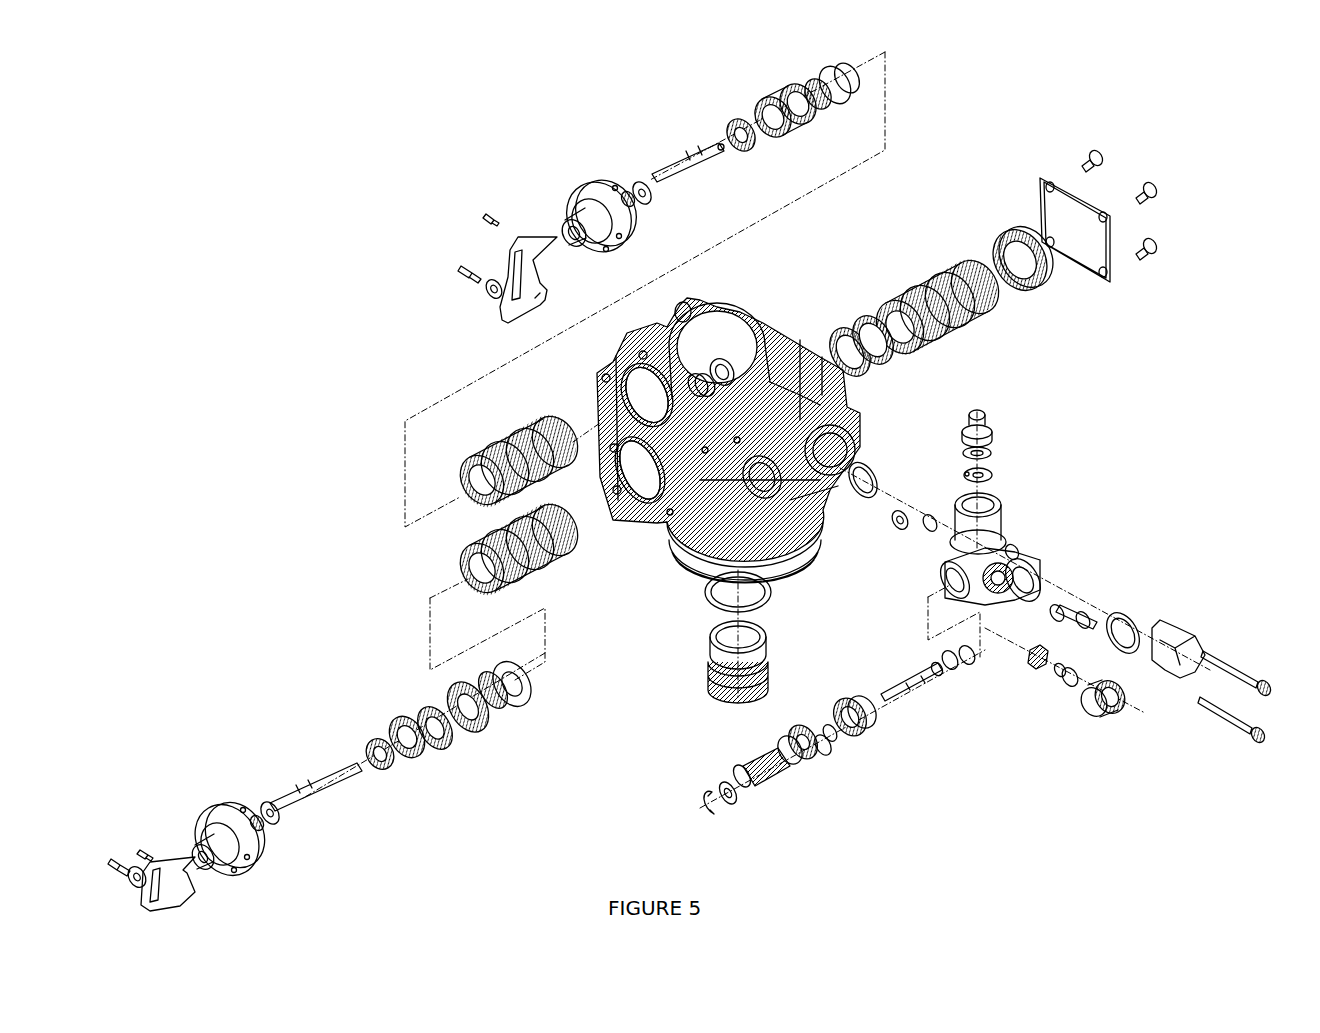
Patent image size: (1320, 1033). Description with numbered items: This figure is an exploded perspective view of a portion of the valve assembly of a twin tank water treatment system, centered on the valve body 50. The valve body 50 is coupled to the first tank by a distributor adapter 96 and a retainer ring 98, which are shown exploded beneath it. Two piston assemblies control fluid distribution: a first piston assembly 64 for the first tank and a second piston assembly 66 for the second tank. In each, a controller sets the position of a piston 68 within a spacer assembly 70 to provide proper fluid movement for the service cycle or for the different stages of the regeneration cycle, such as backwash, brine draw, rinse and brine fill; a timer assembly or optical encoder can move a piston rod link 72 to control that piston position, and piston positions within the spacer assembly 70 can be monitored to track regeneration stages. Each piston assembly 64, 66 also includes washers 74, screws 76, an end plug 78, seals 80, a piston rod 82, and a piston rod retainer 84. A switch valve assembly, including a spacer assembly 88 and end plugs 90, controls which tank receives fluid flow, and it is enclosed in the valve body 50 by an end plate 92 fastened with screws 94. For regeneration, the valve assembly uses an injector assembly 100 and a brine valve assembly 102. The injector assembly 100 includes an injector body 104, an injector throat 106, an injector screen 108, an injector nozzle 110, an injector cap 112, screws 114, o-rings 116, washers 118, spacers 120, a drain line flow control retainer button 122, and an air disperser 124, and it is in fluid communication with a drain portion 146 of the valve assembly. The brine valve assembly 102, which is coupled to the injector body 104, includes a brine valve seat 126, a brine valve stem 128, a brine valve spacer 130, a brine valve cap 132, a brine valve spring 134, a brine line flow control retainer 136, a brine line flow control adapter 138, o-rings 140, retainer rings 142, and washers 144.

The valve body 50 is at (690, 305).
The first piston assembly 64 is at (267, 739).
The second piston assembly 66 is at (569, 99).
The piston 68 is at (790, 90).
The spacer assembly 70 is at (475, 445).
The piston rod link 72 is at (555, 236).
The washers 74 is at (484, 295).
The screws 76 is at (484, 215).
The end plug 78 is at (571, 205).
The seals 80 is at (628, 196).
The piston rod 82 is at (686, 162).
The piston rod retainer 84 is at (730, 126).
The spacer assembly 88 is at (882, 314).
The end plugs 90 is at (848, 330).
The end plate 92 is at (1040, 190).
The screws 94 is at (1102, 153).
The distributor adapter 96 is at (772, 655).
The retainer ring 98 is at (772, 596).
The injector assembly 100 is at (1092, 433).
The brine valve assembly 102 is at (951, 807).
The injector body 104 is at (1015, 543).
The injector throat 106 is at (1050, 605).
The injector screen 108 is at (1085, 612).
The injector nozzle 110 is at (1120, 622).
The injector cap 112 is at (1190, 640).
The screws 114 is at (1245, 666).
The o-rings 116 is at (993, 450).
The washers 118 is at (992, 474).
The spacers 120 is at (948, 470).
The drain line flow control retainer button 122 is at (990, 420).
The air disperser 124 is at (893, 525).
The brine valve seat 126 is at (942, 662).
The brine valve stem 128 is at (912, 697).
The brine valve spacer 130 is at (868, 728).
The brine valve cap 132 is at (808, 770).
The brine valve spring 134 is at (770, 790).
The brine line flow control retainer 136 is at (1030, 660).
The brine line flow control adapter 138 is at (1098, 713).
The o-rings 140 is at (960, 648).
The retainer rings 142 is at (716, 812).
The washers 144 is at (1055, 678).
The drain portion 146 is at (700, 395).